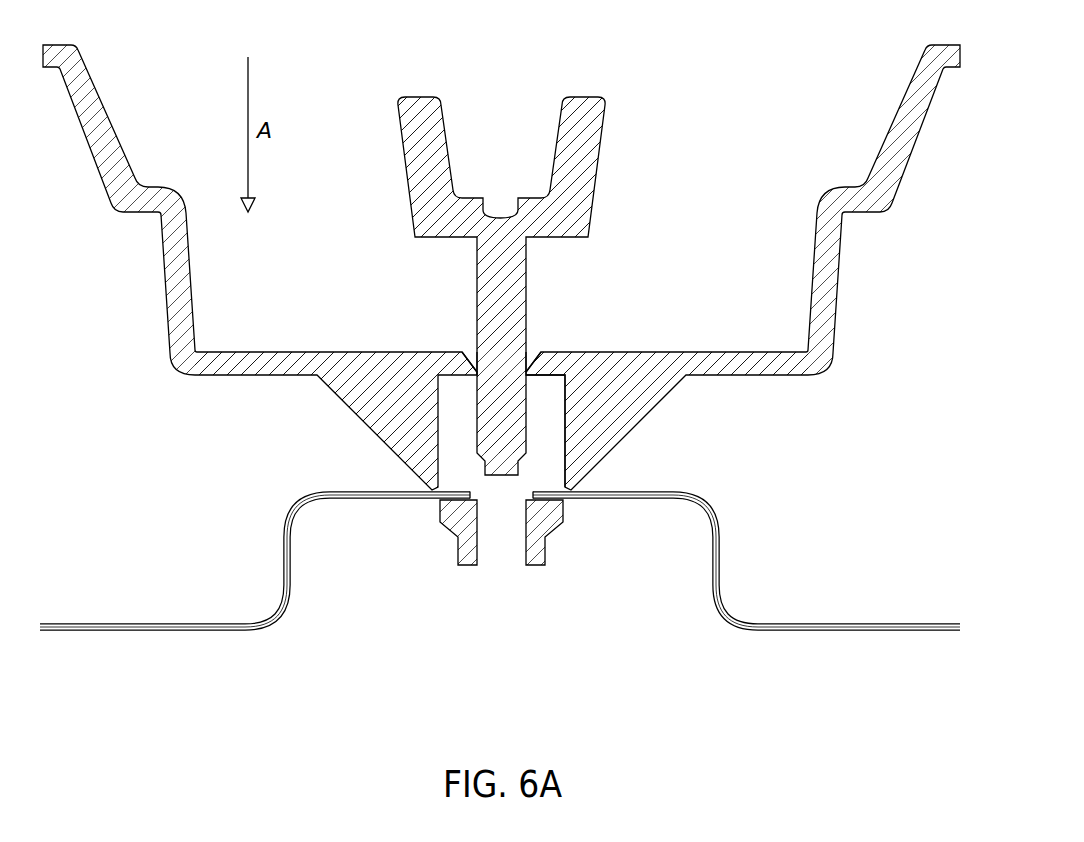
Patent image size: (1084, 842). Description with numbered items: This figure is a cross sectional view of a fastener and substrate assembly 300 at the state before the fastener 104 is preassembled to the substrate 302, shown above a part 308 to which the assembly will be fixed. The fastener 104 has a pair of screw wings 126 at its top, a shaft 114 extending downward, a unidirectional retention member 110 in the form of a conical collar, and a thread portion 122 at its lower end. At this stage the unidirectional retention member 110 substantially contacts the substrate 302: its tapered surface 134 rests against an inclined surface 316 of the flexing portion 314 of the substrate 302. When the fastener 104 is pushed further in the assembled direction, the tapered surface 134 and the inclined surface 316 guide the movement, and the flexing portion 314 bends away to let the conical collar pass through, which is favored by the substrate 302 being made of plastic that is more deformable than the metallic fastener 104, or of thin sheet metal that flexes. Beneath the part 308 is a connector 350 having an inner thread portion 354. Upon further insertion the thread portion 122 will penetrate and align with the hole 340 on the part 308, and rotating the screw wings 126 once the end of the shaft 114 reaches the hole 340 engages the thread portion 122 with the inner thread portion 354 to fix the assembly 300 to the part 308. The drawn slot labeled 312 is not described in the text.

The fastener 104 is at (528, 273).
The unidirectional retention member 110 is at (533, 352).
The shaft 114 is at (486, 302).
The thread portion 122 is at (500, 433).
The screw wings 126 is at (580, 135).
The tapered surface 134 is at (470, 364).
The fastener and substrate assembly 300 is at (836, 283).
The substrate 302 is at (728, 353).
The part 308 is at (864, 623).
The slot 312 is at (531, 378).
The flexing portion 314 is at (462, 358).
The inclined surface 316 is at (541, 352).
The hole 340 is at (507, 495).
The connector 350 is at (548, 548).
The inner thread portion 354 is at (477, 540).